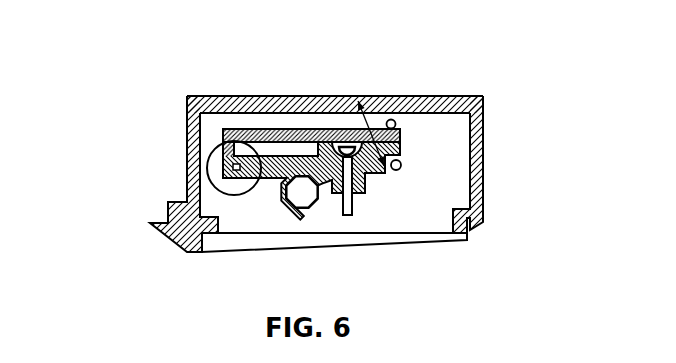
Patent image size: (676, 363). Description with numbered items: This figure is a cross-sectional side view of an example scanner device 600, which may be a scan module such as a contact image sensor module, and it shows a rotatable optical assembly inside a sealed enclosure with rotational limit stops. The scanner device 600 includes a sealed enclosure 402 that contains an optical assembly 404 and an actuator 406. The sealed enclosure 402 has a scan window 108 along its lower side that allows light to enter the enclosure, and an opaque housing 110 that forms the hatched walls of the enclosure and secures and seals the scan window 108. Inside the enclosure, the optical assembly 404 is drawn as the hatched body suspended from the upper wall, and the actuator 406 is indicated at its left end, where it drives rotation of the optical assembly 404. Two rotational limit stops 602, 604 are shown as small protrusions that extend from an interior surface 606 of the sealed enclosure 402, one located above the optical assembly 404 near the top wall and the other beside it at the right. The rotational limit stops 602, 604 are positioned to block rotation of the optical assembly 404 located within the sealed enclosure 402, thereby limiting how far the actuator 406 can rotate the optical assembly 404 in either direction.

The scanner device 600 is at (166, 96).
The sealed enclosure 402 is at (184, 126).
The actuator 406 is at (229, 166).
The opaque housing 110 is at (274, 106).
The optical assembly 404 is at (332, 118).
The rotational limit stop 602 is at (389, 119).
The rotational limit stop 604 is at (397, 171).
The interior surface 606 is at (445, 170).
The scan window 108 is at (227, 243).